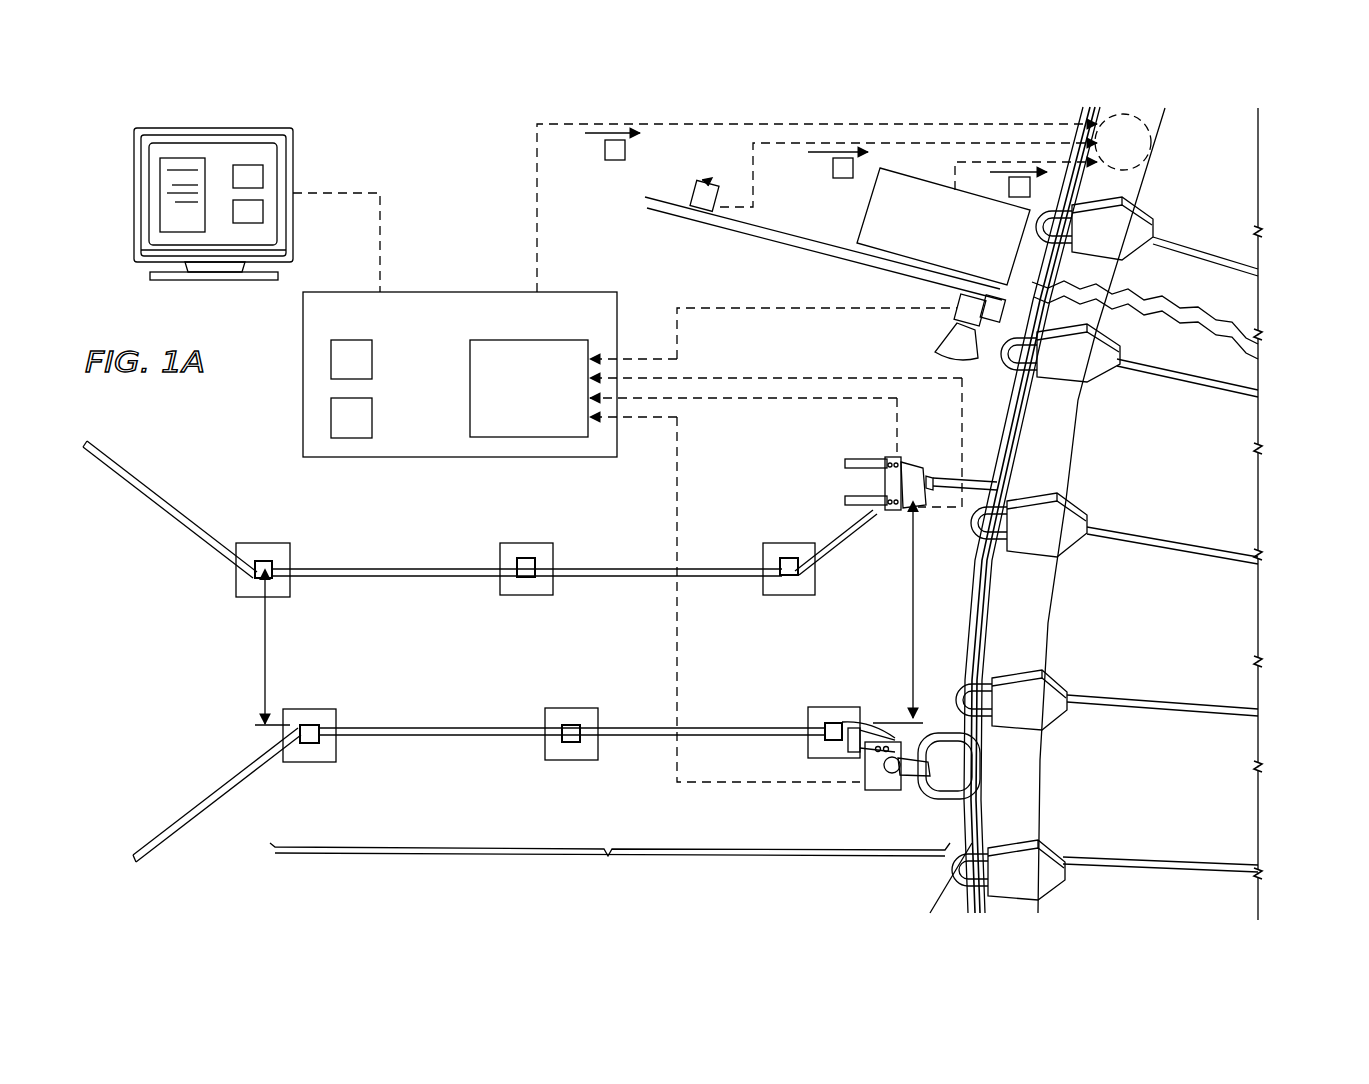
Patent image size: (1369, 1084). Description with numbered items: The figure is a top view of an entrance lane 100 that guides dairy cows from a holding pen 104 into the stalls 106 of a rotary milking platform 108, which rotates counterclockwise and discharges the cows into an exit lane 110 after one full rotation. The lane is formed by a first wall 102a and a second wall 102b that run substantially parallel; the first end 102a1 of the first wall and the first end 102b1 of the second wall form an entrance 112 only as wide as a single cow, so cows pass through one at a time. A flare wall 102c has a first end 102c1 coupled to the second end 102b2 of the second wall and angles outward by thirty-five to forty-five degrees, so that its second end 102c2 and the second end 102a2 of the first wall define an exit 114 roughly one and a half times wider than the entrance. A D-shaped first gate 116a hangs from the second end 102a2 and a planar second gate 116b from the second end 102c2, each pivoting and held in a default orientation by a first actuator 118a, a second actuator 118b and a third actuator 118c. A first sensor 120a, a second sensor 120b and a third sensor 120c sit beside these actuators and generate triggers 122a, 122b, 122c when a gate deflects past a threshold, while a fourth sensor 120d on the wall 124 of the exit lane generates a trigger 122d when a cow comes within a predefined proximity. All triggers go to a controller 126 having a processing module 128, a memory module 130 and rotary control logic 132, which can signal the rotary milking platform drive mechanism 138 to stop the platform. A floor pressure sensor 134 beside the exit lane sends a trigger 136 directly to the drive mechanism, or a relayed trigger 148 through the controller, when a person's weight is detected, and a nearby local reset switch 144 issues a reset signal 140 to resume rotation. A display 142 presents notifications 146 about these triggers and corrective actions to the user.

The entrance lane 100 is at (610, 864).
The first wall 102a is at (512, 722).
The first end of first wall 102a1 is at (300, 762).
The second end of first wall 102a2 is at (843, 705).
The second wall 102b is at (468, 584).
The first end of second wall 102b1 is at (258, 546).
The second end of second wall 102b2 is at (780, 548).
The flare wall 102c is at (826, 528).
The first end of flare wall 102c1 is at (815, 582).
The second end of flare wall 102c2 is at (873, 515).
The holding pen 104 is at (192, 651).
The stalls 106 is at (1094, 510).
The milking platform 108 is at (1278, 412).
The exit lane 110 is at (556, 496).
The entrance 112 is at (258, 658).
The exit 114 is at (912, 645).
The first gate 116a is at (990, 752).
The second gate 116b is at (990, 450).
The first actuator 118a is at (866, 772).
The second actuator 118b is at (848, 498).
The third actuator 118c is at (862, 458).
The first sensor 120a is at (905, 780).
The second sensor 120b is at (928, 500).
The third sensor 120c is at (925, 466).
The fourth sensor 120d is at (957, 322).
The trigger 122a is at (740, 782).
The trigger 122b is at (782, 378).
The trigger 122c is at (748, 400).
The trigger 122d is at (715, 308).
The wall of exit lane 124 is at (885, 298).
The controller 126 is at (300, 370).
The processing module 128 is at (372, 360).
The memory module 130 is at (372, 418).
The rotary control logic 132 is at (470, 396).
The pressure sensor 134 is at (865, 226).
The trigger 136 is at (1009, 190).
The rotary milking platform drive mechanism 138 is at (1150, 148).
The reset signal 140 is at (833, 168).
The display 142 is at (295, 158).
The local reset switch 144 is at (695, 190).
The notifications 146 is at (160, 193).
The trigger 148 is at (605, 150).